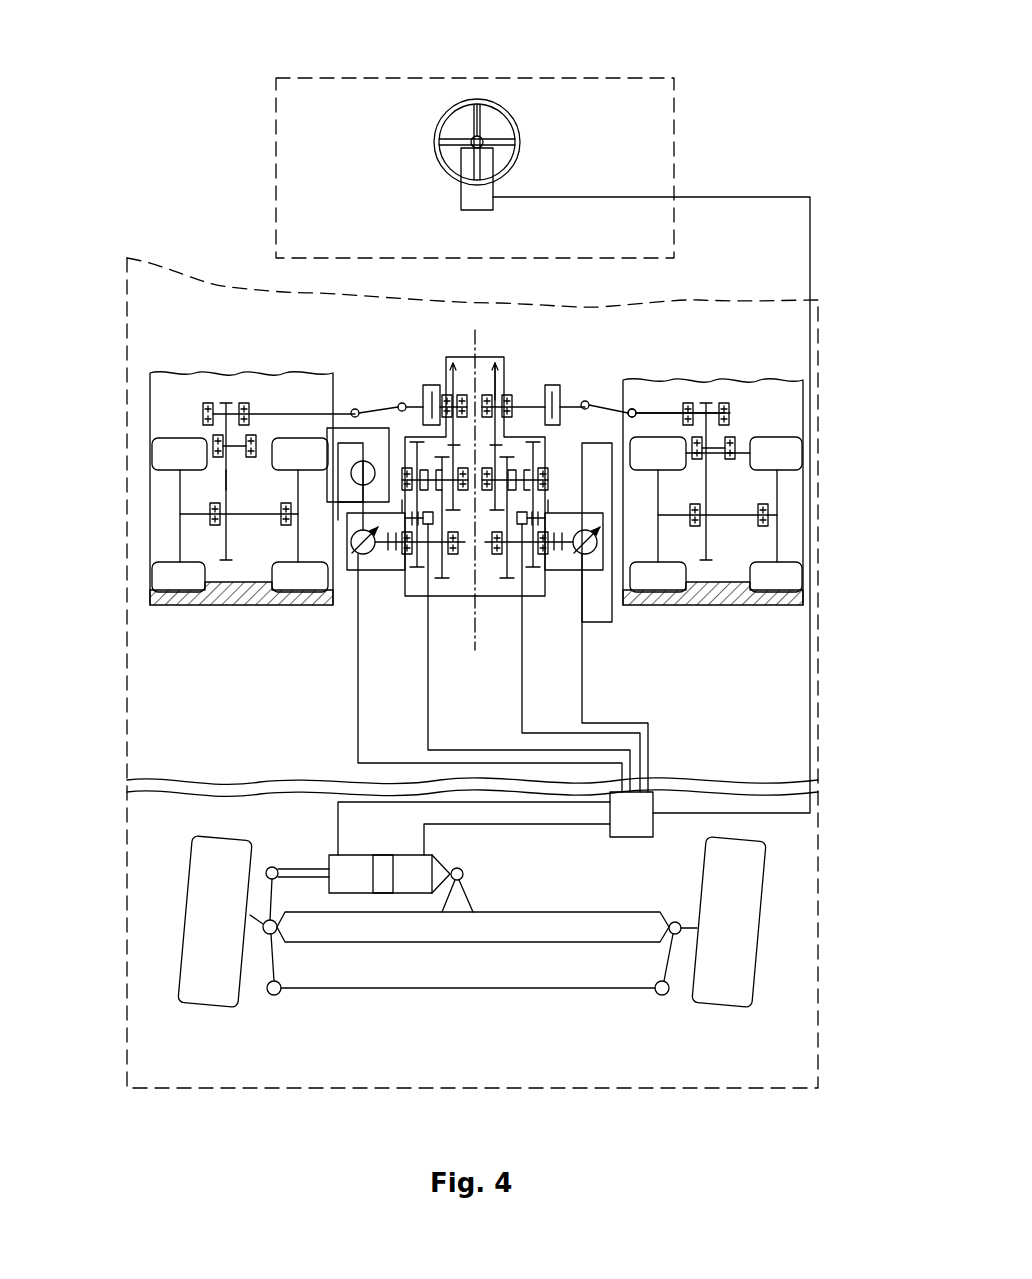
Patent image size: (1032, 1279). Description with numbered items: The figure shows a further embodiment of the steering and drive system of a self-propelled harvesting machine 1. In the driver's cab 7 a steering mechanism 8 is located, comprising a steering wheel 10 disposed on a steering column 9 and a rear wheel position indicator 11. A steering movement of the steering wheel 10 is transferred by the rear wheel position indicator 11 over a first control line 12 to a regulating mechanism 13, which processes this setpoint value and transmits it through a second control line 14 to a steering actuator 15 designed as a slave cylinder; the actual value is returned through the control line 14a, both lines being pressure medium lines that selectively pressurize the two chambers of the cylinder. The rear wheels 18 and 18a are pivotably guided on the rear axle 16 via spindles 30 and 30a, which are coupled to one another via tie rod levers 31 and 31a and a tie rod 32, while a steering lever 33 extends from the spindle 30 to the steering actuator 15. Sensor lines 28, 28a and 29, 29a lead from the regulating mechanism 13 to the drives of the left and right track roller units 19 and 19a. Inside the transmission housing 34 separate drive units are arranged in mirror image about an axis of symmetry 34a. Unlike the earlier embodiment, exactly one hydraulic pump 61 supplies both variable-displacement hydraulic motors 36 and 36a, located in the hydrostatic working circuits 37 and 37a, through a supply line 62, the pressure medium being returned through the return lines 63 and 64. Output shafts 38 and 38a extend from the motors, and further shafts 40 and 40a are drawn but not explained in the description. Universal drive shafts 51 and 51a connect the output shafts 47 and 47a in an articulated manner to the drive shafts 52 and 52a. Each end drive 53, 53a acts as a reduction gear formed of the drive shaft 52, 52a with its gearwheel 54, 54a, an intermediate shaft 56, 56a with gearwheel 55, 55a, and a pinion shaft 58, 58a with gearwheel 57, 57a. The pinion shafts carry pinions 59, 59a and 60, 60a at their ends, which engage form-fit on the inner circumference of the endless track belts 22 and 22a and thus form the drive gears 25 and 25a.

The self-propelled harvesting machine 1 is at (822, 930).
The driver's cab 7 is at (655, 90).
The steering mechanism 8 is at (517, 105).
The steering column 9 is at (470, 147).
The steering wheel 10 is at (477, 100).
The rear wheel position indicator 11 is at (490, 162).
The first control line 12 is at (788, 195).
The regulating mechanism 13 is at (628, 820).
The second control line 14 is at (530, 825).
The control line 14a is at (497, 805).
The steering actuator 15 is at (377, 868).
The rear axle 16 is at (455, 945).
The rear wheel 18 is at (202, 953).
The rear wheel 18a is at (735, 967).
The track roller unit 19 is at (148, 530).
The track roller unit 19a is at (798, 378).
The endless track belt 22 is at (236, 600).
The endless track belt 22a is at (713, 597).
The drive gear 25 is at (290, 462).
The drive gear 25a is at (767, 443).
The sensor line 28 is at (357, 713).
The sensor line 28a is at (652, 728).
The sensor line 29 is at (427, 705).
The sensor line 29a is at (650, 757).
The spindle 30 is at (263, 925).
The spindle 30a is at (675, 921).
The tie rod lever 31 is at (272, 996).
The tie rod lever 31a is at (668, 995).
The tie rod 32 is at (558, 995).
The steering lever 33 is at (267, 897).
The transmission housing 34 is at (403, 600).
The axis of symmetry 34a is at (470, 655).
The hydraulic motor 36 is at (352, 600).
The hydraulic motor 36a is at (566, 600).
The hydrostatic working circuit 37 is at (347, 440).
The hydrostatic working circuit 37a is at (598, 440).
The output shaft 38 is at (404, 400).
The output shaft 38a is at (568, 530).
The drive shaft 40 is at (453, 358).
The drive shaft 40a is at (497, 358).
The output shaft 47 is at (432, 385).
The output shaft 47a is at (553, 385).
The universal drive shaft 51 is at (356, 408).
The universal drive shaft 51a is at (640, 405).
The drive shaft 52 is at (267, 410).
The drive shaft 52a is at (650, 412).
The end drive 53 is at (203, 430).
The end drive 53a is at (717, 470).
The gearwheel 54 is at (218, 405).
The gearwheel 54a is at (720, 413).
The gearwheel 55 is at (215, 458).
The gearwheel 55a is at (700, 460).
The intermediate shaft 56 is at (228, 427).
The intermediate shaft 56a is at (713, 450).
The gearwheel 57 is at (208, 598).
The gearwheel 57a is at (717, 550).
The pinion shaft 58 is at (259, 598).
The pinion shaft 58a is at (718, 517).
The pinion 59 is at (165, 452).
The pinion 59a is at (795, 462).
The pinion 60 is at (308, 452).
The pinion 60a is at (660, 580).
The hydraulic pump 61 is at (368, 462).
The supply line 62 is at (285, 580).
The return line 63 is at (592, 655).
The return line 64 is at (360, 505).